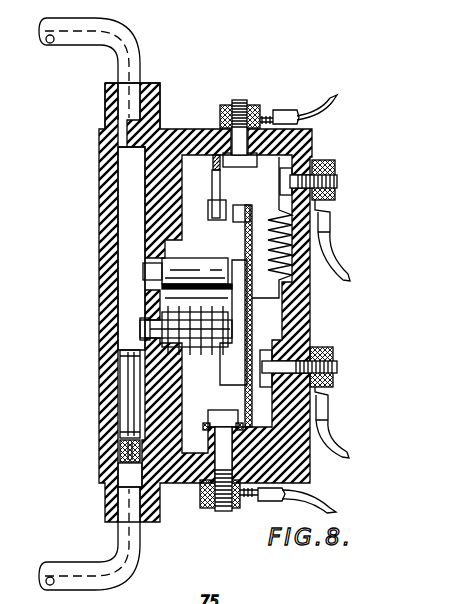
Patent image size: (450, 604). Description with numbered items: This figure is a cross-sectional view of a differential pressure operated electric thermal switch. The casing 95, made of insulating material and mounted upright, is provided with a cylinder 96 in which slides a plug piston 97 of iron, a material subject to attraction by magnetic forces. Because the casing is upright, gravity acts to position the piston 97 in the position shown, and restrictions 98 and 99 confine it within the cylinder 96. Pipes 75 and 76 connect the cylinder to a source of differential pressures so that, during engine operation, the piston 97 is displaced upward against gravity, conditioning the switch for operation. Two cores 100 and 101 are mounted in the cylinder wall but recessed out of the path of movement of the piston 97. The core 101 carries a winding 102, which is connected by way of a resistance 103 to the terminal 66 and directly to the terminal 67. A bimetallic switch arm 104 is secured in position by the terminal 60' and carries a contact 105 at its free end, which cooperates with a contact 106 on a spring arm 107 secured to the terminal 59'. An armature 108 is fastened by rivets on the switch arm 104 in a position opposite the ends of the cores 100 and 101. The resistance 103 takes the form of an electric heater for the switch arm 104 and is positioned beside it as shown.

The pipe 75 is at (95, 50).
The pipe 76 is at (95, 562).
The casing 95 is at (100, 260).
The cylinder 96 is at (125, 182).
The plug piston 97 is at (122, 388).
The restriction 98 is at (128, 142).
The restriction 99 is at (100, 456).
The core 100 is at (180, 258).
The core 101 is at (175, 348).
The winding 102 is at (150, 325).
The resistance 103 is at (296, 260).
The bimetallic switch arm 104 is at (246, 398).
The contact 105 is at (240, 206).
The contact 106 is at (226, 222).
The spring arm 107 is at (213, 178).
The armature 108 is at (250, 310).
The terminal 59' is at (278, 119).
The terminal 60' is at (268, 483).
The terminal 66 is at (337, 182).
The terminal 67 is at (338, 369).